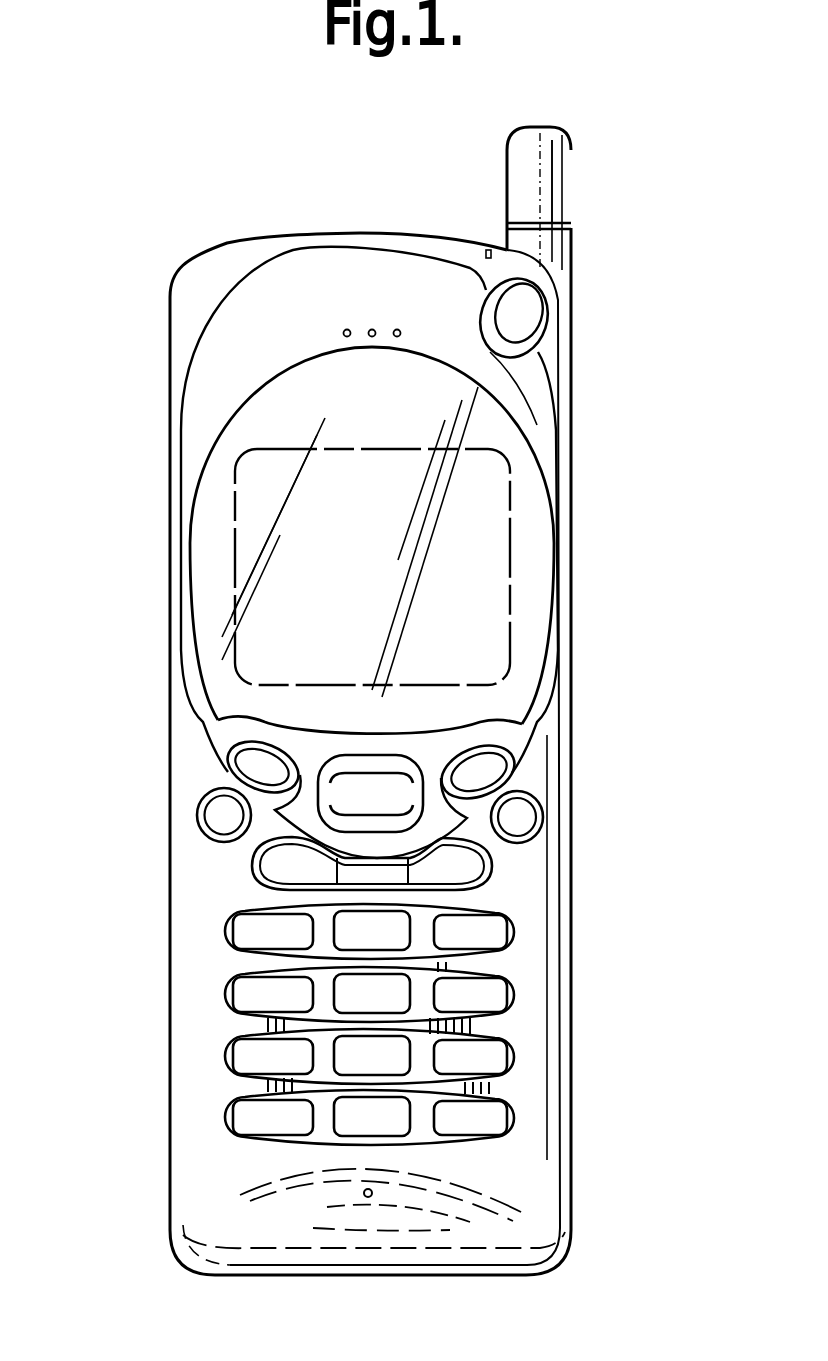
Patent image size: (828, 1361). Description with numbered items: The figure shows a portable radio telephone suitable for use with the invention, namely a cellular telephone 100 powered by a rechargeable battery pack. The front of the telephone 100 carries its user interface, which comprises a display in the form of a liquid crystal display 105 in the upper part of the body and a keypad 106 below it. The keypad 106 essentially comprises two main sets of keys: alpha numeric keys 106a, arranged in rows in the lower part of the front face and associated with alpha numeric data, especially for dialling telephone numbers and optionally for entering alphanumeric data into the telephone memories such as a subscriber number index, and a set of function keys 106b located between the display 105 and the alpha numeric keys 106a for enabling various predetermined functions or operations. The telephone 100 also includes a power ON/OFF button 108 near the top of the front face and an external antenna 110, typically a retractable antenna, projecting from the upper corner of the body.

The cellular telephone 100 is at (203, 196).
The liquid crystal display 105 is at (472, 630).
The keypad 106 is at (605, 770).
The alpha numeric keys 106a is at (142, 912).
The function keys 106b is at (138, 730).
The power ON/OFF button 108 is at (522, 327).
The external antenna 110 is at (548, 184).